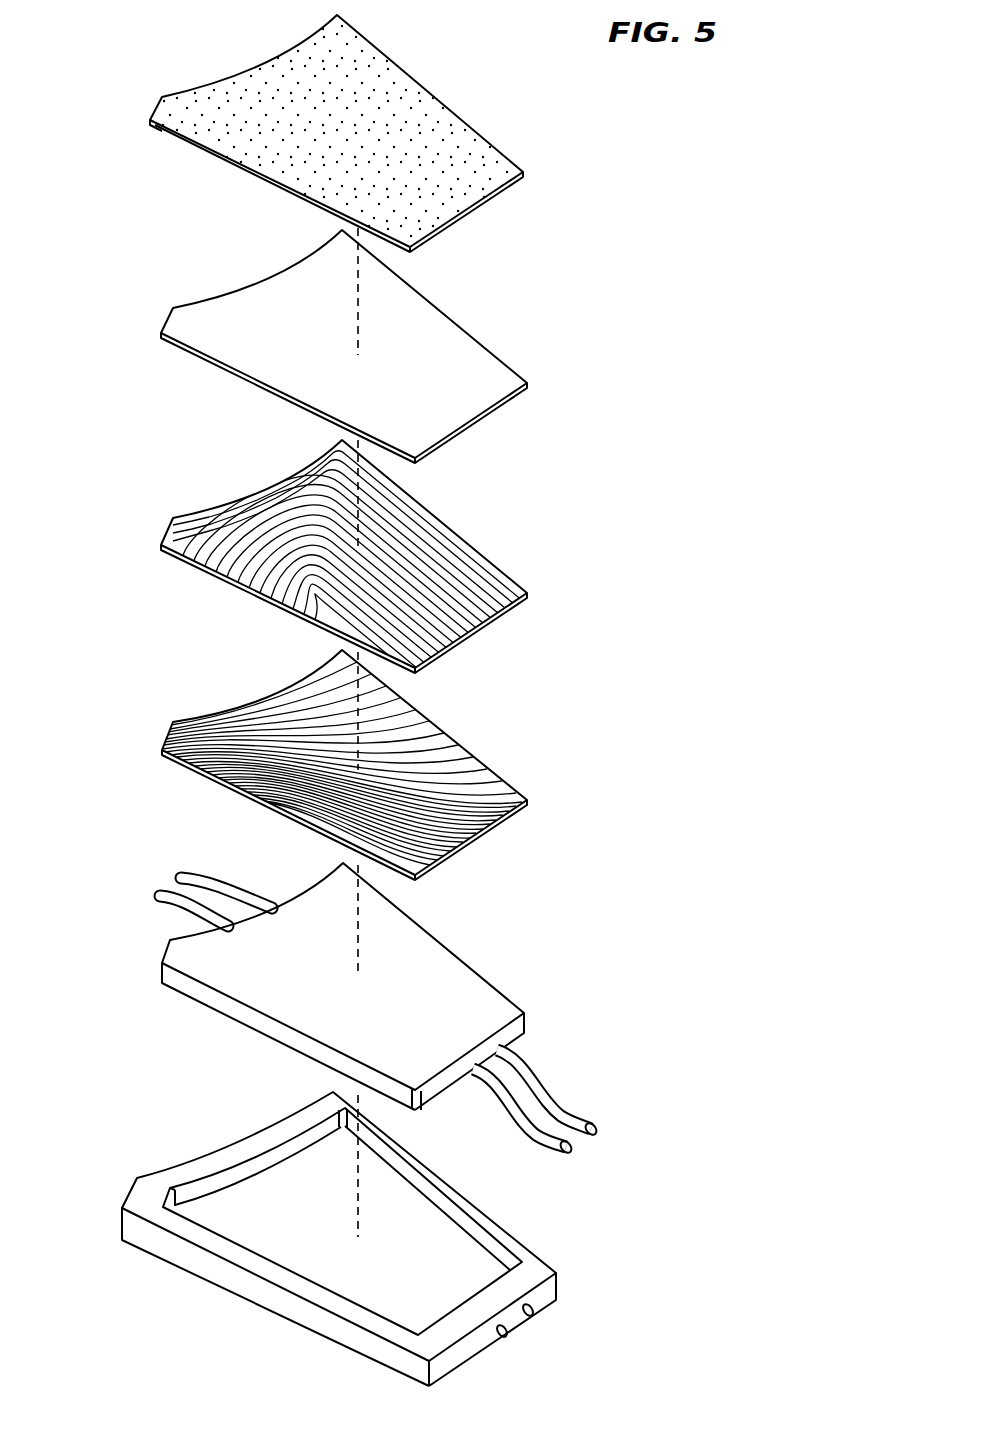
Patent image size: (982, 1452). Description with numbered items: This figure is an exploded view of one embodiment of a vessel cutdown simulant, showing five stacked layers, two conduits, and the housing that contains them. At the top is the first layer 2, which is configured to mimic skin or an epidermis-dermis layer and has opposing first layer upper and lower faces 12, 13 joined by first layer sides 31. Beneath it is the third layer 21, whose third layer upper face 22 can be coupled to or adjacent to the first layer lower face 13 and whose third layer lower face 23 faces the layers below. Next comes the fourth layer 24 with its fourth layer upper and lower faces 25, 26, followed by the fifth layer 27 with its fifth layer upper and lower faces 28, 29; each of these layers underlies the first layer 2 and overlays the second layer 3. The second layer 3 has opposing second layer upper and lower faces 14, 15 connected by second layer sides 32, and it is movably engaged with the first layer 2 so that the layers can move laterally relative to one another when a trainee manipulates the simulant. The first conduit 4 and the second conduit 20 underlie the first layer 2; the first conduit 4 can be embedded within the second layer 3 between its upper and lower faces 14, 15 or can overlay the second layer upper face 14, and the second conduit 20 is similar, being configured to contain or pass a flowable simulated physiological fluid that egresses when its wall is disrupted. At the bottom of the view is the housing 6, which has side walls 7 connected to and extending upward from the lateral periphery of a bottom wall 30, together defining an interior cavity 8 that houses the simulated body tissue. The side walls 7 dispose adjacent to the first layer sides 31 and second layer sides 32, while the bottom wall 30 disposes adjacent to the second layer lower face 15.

The first layer 2 is at (365, 133).
The first layer upper face 12 is at (473, 166).
The first layer lower face 13 is at (183, 141).
The first layer sides 31 is at (240, 168).
The third layer 21 is at (370, 346).
The third layer upper face 22 is at (470, 386).
The third layer lower face 23 is at (180, 348).
The fourth layer 24 is at (383, 606).
The fourth layer upper face 25 is at (232, 541).
The fourth layer lower face 26 is at (270, 607).
The fifth layer 27 is at (352, 765).
The fifth layer upper face 28 is at (245, 753).
The fifth layer lower face 29 is at (250, 800).
The second layer 3 is at (338, 1027).
The second layer upper face 14 is at (228, 965).
The second layer sides 32 is at (192, 988).
The second layer lower face 15 is at (228, 1018).
The first conduit 4 is at (216, 902).
The second conduit 20 is at (545, 1136).
The housing 6 is at (306, 1239).
The side wall 7 is at (162, 1243).
The bottom wall 30 is at (245, 1297).
The interior cavity 8 is at (405, 1256).